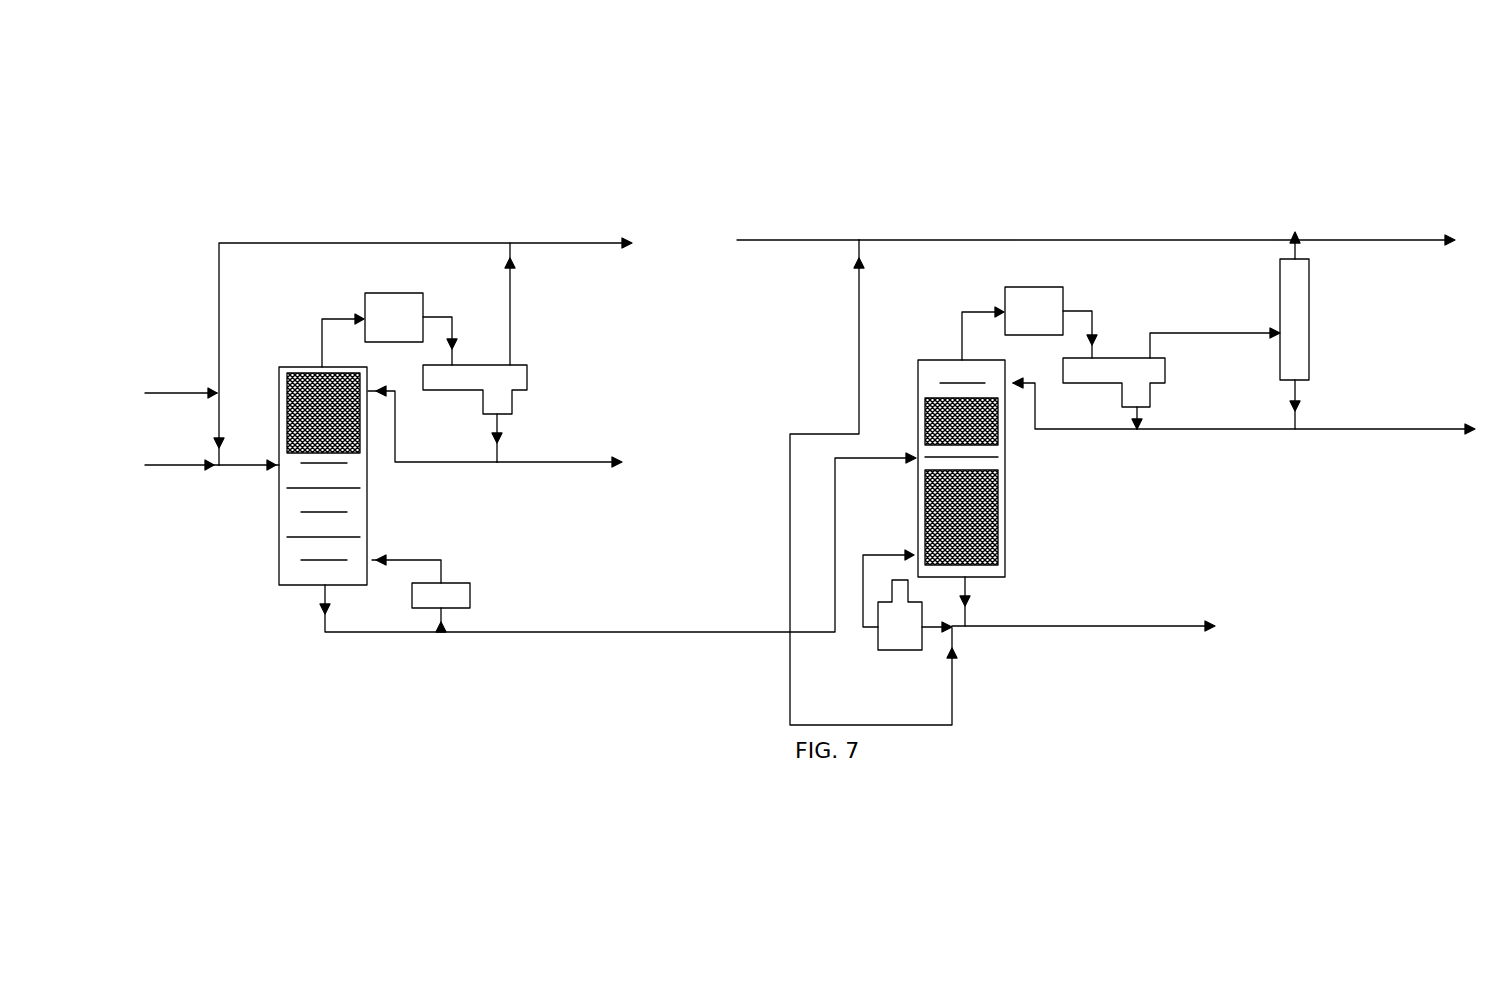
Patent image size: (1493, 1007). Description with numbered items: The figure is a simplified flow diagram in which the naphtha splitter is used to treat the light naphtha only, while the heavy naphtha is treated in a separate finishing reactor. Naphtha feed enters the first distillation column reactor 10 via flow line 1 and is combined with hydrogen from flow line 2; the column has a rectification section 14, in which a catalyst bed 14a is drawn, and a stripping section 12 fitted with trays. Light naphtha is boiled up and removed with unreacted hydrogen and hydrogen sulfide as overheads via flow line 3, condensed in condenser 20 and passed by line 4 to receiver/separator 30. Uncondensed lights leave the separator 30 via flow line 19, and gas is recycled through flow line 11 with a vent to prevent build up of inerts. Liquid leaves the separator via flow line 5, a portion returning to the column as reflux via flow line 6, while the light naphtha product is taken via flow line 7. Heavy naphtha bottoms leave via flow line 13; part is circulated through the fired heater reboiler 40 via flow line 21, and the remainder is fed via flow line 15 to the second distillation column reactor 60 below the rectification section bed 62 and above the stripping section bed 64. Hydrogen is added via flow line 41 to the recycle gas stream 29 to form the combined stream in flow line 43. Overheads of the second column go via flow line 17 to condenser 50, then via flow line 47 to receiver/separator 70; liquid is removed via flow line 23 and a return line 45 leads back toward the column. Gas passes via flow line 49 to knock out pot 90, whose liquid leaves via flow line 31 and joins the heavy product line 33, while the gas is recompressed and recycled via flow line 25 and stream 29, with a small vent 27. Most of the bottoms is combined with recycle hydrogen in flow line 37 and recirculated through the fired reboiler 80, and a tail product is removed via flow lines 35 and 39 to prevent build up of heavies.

The flow line 1 is at (178, 466).
The flow line 2 is at (171, 401).
The flow line 3 is at (330, 318).
The condensed overhead line 4 is at (452, 317).
The flow line 5 is at (492, 441).
The flow line 6 is at (462, 463).
The flow line 7 is at (560, 462).
The distillation column reactor 10 is at (339, 448).
The flow line 11 is at (439, 243).
The stripping section 12 is at (355, 513).
The flow line 13 is at (406, 633).
The rectification section 14 is at (279, 400).
The catalyst bed 14a is at (303, 402).
The flow line 15 is at (576, 633).
The flow line 17 is at (969, 312).
The flow line 19 is at (512, 306).
The condenser 20 is at (394, 317).
The flow line 21 is at (458, 626).
The flow line 23 is at (1195, 453).
The flow line 25 is at (1292, 248).
The vent 27 is at (1351, 240).
The recycle gas stream 29 is at (1198, 240).
The receiver/separator 30 is at (515, 380).
The flow line 31 is at (1297, 404).
The product line 33 is at (1369, 429).
The flow line 35 is at (969, 600).
The flow line 37 is at (942, 632).
The flow line 39 is at (1062, 627).
The fired heater reboiler 40 is at (455, 595).
The flow line 41 is at (800, 240).
The flow line 43 is at (855, 300).
The reflux line 45 is at (1064, 430).
The flow line 47 is at (1093, 341).
The flow line 49 is at (1194, 333).
The condenser 50 is at (1034, 311).
The second distillation column reactor 60 is at (937, 451).
The rectification section bed 62 is at (937, 426).
The stripping section bed 64 is at (945, 521).
The receiver/separator 70 is at (1132, 382).
The fired reboiler 80 is at (886, 632).
The knock out pot 90 is at (1278, 298).